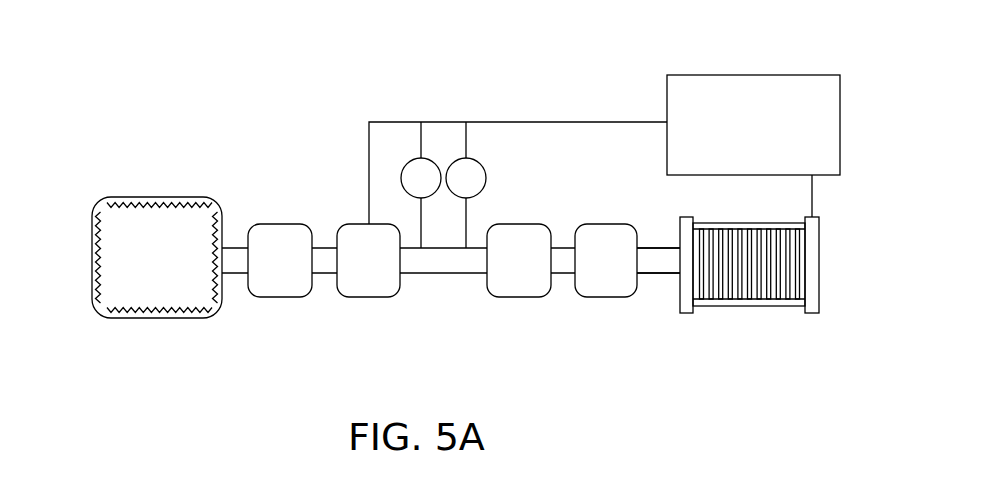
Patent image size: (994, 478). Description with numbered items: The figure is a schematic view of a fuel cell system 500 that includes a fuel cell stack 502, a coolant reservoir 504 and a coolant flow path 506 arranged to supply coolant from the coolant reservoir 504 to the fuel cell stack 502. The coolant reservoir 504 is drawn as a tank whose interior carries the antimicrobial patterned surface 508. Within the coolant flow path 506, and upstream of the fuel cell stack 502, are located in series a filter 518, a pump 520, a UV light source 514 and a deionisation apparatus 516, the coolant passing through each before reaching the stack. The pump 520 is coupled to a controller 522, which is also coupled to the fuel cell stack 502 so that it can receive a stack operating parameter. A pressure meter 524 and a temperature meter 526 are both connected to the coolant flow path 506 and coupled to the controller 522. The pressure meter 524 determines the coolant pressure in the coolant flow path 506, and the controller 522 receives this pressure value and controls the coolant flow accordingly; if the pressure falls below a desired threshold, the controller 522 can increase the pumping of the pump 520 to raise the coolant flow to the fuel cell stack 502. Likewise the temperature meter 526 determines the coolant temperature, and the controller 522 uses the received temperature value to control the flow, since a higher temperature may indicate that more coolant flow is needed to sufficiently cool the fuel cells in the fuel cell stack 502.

The fuel cell system 500 is at (120, 170).
The fuel cell stack 502 is at (750, 307).
The coolant reservoir 504 is at (198, 319).
The coolant flow path 506 is at (662, 245).
The antimicrobial patterned surface 508 is at (138, 308).
The UV light source 514 is at (517, 298).
The deionisation apparatus 516 is at (606, 298).
The filter 518 is at (280, 298).
The pump 520 is at (367, 298).
The controller 522 is at (755, 74).
The pressure meter 524 is at (427, 158).
The temperature meter 526 is at (471, 158).